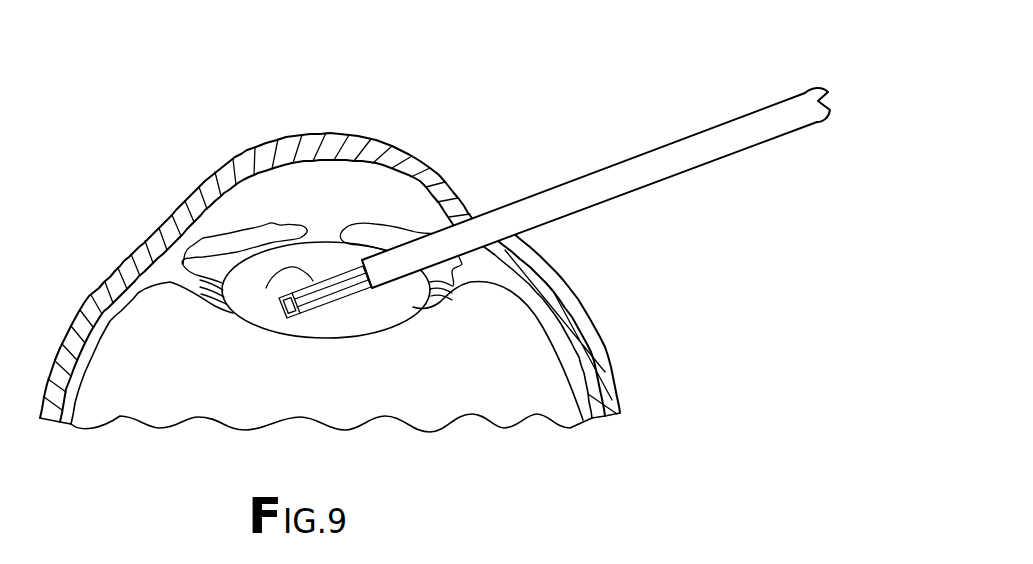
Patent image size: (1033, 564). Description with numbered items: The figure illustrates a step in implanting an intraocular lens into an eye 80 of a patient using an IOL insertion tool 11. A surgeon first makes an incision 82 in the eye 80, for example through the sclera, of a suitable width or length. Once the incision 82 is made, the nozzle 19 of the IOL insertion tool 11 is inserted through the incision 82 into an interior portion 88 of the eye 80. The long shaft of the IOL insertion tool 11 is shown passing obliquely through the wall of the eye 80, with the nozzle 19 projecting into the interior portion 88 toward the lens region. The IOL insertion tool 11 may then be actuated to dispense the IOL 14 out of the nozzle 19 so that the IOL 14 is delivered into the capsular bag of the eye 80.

The IOL insertion tool 11 is at (689, 128).
The IOL 14 is at (266, 288).
The nozzle 19 is at (380, 303).
The eye 80 is at (244, 126).
The incision 82 is at (502, 240).
The interior portion 88 is at (412, 302).